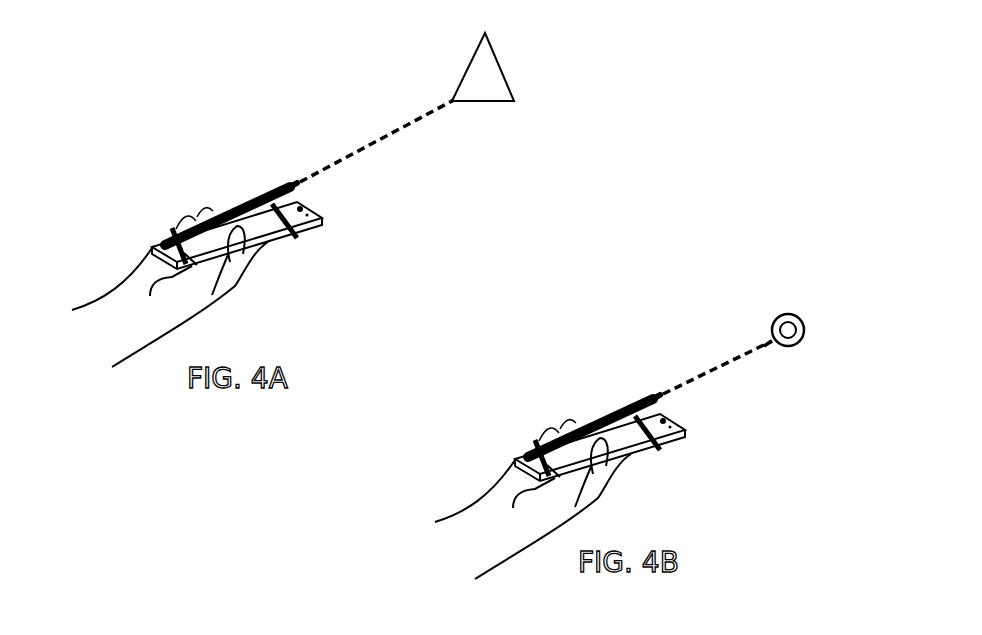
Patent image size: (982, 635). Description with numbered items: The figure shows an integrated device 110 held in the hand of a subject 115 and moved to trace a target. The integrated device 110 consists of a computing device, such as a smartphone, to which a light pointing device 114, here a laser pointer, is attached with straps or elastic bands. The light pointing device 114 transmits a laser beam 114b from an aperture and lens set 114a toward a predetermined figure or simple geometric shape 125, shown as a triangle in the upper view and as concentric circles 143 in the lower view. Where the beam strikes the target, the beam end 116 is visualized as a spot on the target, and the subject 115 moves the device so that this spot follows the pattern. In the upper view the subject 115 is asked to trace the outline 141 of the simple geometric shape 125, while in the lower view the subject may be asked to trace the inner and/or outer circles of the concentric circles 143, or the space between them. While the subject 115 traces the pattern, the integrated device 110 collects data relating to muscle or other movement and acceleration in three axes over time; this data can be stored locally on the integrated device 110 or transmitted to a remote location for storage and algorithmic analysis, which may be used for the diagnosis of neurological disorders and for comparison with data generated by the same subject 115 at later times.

In FIG. 4A, the integrated device 110 is at (188, 166).
In FIG. 4B, the integrated device 110 is at (551, 378).
In FIG. 4A, the light pointing device 114 is at (177, 230).
In FIG. 4B, the light pointing device 114 is at (540, 442).
In FIG. 4A, the aperture and lens set 114a is at (293, 177).
In FIG. 4B, the aperture and lens set 114a is at (658, 395).
In FIG. 4A, the laser beam 114b is at (360, 149).
In FIG. 4B, the laser beam 114b is at (725, 370).
In FIG. 4A, the subject 115 is at (140, 343).
In FIG. 4A, the beam end 116 is at (452, 101).
In FIG. 4A, the simple geometric shape 125 is at (510, 118).
In FIG. 4B, the simple geometric shape 125 is at (776, 368).
In FIG. 4A, the outline 141 is at (490, 41).
In FIG. 4B, the concentric circles 143 is at (800, 318).